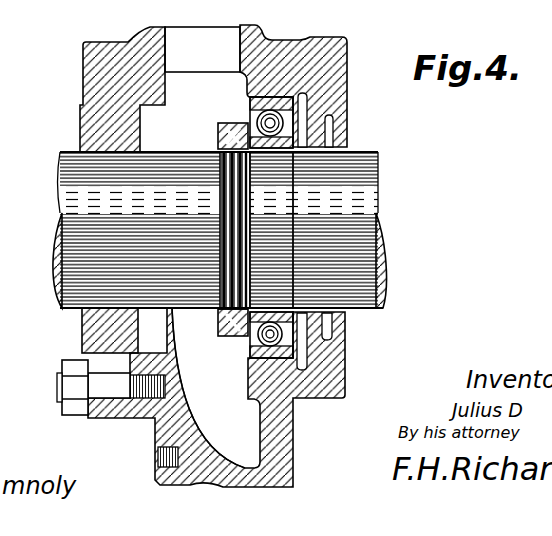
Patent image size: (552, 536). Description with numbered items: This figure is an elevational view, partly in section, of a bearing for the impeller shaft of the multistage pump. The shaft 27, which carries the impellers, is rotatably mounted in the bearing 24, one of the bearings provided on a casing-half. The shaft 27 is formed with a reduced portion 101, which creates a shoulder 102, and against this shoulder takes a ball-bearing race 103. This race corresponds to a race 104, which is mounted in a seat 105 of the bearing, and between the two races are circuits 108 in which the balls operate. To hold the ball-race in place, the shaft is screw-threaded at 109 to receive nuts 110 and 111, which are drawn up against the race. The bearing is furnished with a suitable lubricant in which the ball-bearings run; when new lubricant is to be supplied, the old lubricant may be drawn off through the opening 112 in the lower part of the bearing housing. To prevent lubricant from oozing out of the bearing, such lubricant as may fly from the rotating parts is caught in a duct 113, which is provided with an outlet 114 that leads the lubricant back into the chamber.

The bearing 24 is at (95, 66).
The shaft 27 is at (376, 186).
The reduced portion 101 is at (283, 190).
The shoulder 102 is at (372, 150).
The ball-bearing race 103 is at (218, 130).
The race 104 is at (256, 103).
The seat 105 is at (282, 88).
The circuits 108 is at (256, 360).
The screw-threaded portion 109 is at (220, 309).
The nut 110 is at (224, 322).
The nut 111 is at (242, 333).
The opening 112 is at (198, 458).
The duct 113 is at (347, 90).
The outlet 114 is at (347, 340).